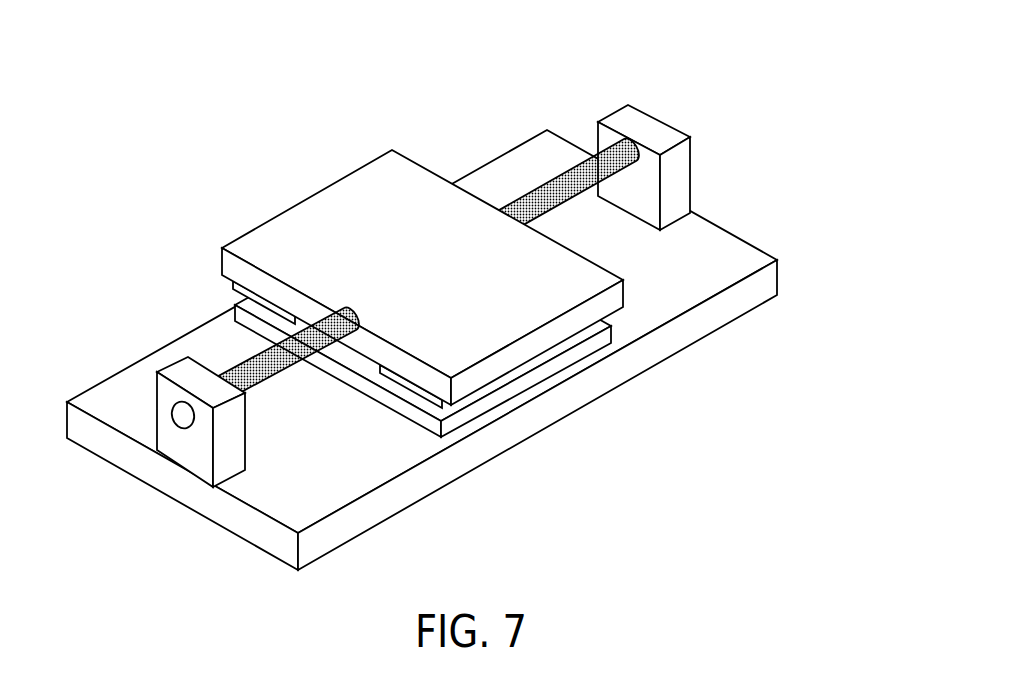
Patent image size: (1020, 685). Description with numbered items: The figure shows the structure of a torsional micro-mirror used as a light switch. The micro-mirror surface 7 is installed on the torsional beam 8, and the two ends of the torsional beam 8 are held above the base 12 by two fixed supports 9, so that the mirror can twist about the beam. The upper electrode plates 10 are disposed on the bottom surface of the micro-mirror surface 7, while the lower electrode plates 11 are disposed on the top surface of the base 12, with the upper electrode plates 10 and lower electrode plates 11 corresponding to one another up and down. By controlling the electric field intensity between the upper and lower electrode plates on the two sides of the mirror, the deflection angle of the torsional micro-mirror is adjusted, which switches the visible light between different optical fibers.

The micro-mirror surface 7 is at (378, 231).
The torsional beam 8 is at (621, 180).
The fixed supports 9 is at (680, 185).
The upper electrode plates 10 is at (412, 383).
The lower electrode plates 11 is at (545, 365).
The base 12 is at (636, 350).